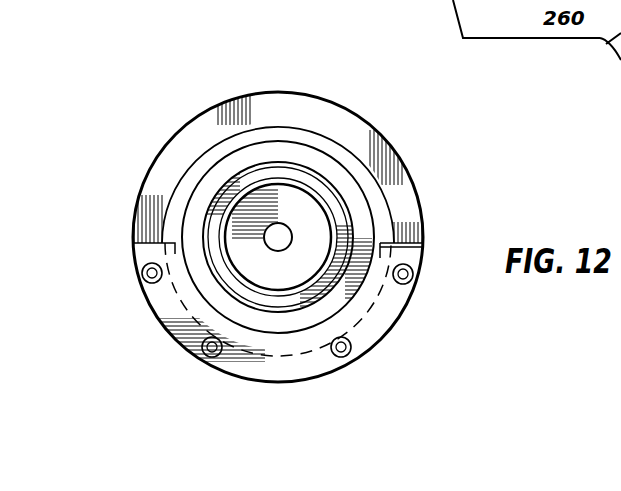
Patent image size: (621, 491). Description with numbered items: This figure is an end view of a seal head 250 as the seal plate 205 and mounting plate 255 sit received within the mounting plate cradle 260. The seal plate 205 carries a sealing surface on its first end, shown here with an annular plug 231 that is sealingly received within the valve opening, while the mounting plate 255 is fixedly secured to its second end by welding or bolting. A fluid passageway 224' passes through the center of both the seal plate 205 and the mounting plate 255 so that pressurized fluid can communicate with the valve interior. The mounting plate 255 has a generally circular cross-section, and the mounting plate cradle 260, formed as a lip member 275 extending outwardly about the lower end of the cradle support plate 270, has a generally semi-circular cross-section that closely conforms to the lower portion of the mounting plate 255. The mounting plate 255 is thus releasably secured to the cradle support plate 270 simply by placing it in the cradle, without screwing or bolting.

The seal plate 205 is at (305, 153).
The fluid passageway 224' is at (171, 250).
The annular plug 231 is at (233, 200).
The seal head 250 is at (332, 88).
The mounting plate 255 is at (230, 138).
The mounting plate cradle 260 is at (366, 337).
The cradle support plate 270 is at (420, 196).
The lip member 275 is at (265, 355).